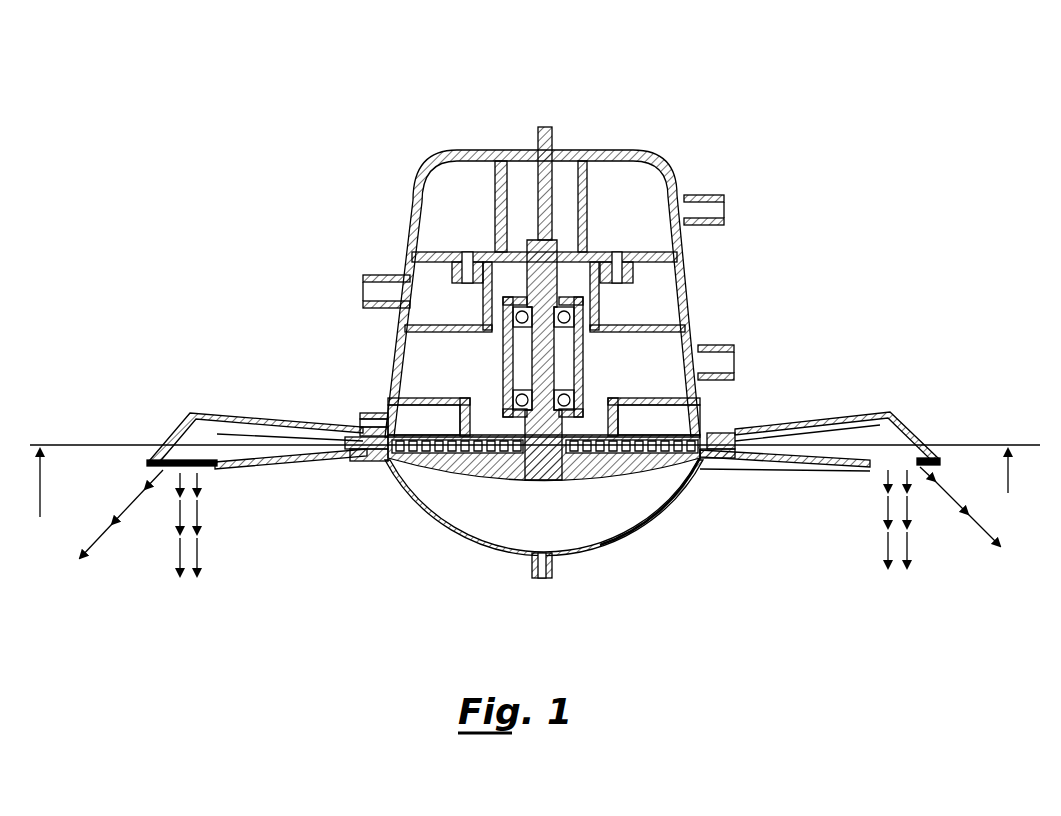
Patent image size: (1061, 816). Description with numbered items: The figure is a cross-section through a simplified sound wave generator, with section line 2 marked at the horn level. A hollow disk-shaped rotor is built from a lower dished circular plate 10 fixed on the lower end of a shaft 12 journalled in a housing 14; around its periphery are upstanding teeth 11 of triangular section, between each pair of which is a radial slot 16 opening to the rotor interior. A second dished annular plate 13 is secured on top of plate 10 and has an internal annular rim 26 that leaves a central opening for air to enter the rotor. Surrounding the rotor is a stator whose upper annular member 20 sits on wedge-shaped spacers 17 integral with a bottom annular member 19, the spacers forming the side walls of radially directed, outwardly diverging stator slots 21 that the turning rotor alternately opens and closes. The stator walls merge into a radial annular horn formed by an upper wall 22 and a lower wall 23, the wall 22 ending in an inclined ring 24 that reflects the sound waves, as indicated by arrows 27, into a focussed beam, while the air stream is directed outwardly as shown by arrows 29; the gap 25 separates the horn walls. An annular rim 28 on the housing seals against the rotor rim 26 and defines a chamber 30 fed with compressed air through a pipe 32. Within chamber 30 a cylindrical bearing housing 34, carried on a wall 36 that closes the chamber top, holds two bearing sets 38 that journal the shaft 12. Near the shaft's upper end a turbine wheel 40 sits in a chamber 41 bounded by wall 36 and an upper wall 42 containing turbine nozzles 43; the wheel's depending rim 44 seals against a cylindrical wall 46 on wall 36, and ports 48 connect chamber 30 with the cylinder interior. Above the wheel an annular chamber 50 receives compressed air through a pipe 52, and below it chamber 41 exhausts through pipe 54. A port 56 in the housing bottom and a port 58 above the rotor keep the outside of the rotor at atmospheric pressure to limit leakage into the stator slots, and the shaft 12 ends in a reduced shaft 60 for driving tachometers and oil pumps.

The section line 2- 2 is at (514, 499).
The lower dished circular plate 10 is at (583, 463).
The upstanding teeth 11 is at (445, 454).
The shaft 12 is at (552, 352).
The second dished annular plate 13 is at (433, 438).
The housing 14 is at (618, 549).
The radial slot 16 is at (496, 452).
The wedge-shaped spacers 17 is at (770, 425).
The bottom annular member 19 is at (718, 462).
The upper annular member 20 is at (360, 434).
The stator slots 21 is at (360, 452).
The upper wall 22 is at (226, 426).
The lower wall 23 is at (235, 466).
The inclined wall or ring 24 is at (912, 440).
The gap 25 is at (233, 427).
The annular rim 26 is at (625, 428).
The arrows 27 is at (199, 562).
The annular rim 28 is at (474, 440).
The arrows 29 is at (130, 505).
The chamber 30 is at (668, 356).
The pipe 32 is at (734, 350).
The cylindrical bearing housing 34 is at (583, 380).
The wall 36 is at (430, 333).
The bearing support 38 is at (506, 352).
The turbine wheel 40 is at (550, 346).
The chamber 41 is at (437, 305).
The upper wall 42 is at (437, 256).
The turbine nozzles 43 is at (467, 253).
The annular depending rim 44 is at (625, 284).
The cylindrical wall 46 is at (603, 322).
The ports 48 is at (490, 334).
The annular chamber 50 is at (623, 210).
The pipe 52 is at (700, 198).
The exhaust pipe 54 is at (380, 276).
The port 56 is at (532, 572).
The port 58 is at (372, 412).
The reduced shaft 60 is at (552, 133).